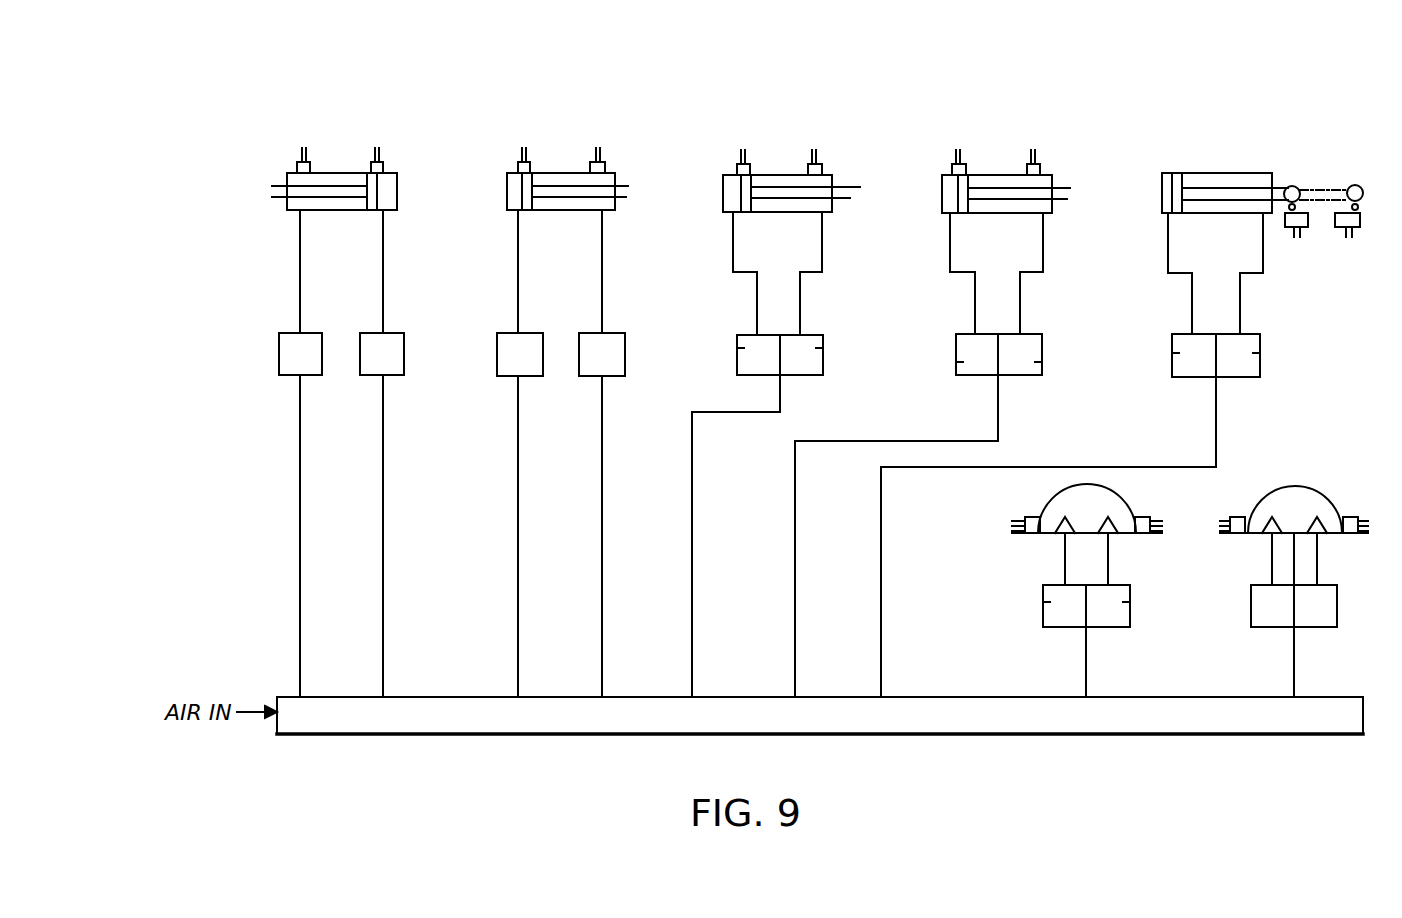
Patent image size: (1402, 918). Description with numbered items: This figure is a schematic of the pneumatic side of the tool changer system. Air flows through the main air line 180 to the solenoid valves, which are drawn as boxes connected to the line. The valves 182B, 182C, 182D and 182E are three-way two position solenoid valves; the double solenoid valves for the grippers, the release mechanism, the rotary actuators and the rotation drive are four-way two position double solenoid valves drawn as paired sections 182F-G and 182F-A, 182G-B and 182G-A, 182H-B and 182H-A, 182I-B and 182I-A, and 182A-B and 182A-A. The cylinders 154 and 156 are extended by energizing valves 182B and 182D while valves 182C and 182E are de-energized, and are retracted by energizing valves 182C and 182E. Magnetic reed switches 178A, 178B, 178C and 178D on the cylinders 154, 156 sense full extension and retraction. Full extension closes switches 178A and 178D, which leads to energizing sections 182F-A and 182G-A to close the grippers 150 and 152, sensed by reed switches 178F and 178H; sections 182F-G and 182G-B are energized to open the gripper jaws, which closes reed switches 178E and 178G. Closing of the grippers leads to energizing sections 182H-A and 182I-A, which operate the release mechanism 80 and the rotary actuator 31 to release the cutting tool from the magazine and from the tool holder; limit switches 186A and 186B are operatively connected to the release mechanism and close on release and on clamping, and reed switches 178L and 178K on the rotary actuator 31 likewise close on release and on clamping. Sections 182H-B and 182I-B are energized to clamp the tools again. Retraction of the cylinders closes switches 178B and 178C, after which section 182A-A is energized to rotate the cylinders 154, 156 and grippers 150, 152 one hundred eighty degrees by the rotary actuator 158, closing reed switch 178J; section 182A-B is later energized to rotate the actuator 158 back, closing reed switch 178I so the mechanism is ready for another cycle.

The cylinder 154 is at (332, 172).
The magnetic reed switch 178A is at (297, 166).
The magnetic reed switch 178B is at (385, 163).
The cylinder 156 is at (557, 173).
The magnetic reed switch 178C is at (518, 165).
The magnetic reed switch 178D is at (605, 165).
The gripper 150 is at (770, 180).
The magnetic reed switch 178E is at (737, 168).
The magnetic reed switch 178F is at (822, 167).
The gripper 152 is at (993, 175).
The magnetic reed switch 178G is at (952, 166).
The magnetic reed switch 178H is at (1040, 167).
The mechanism 80 is at (1240, 160).
The limit switch 186A is at (1287, 226).
The limit switch 186B is at (1362, 215).
The three-way two position solenoid valve 182C is at (283, 335).
The three-way two position solenoid valve 182B is at (399, 333).
The three-way two position solenoid valve 182D is at (500, 368).
The three-way two position solenoid valve 182E is at (610, 378).
The four-way double solenoid valve section 182F-G is at (743, 348).
The four-way double solenoid valve section 182F-A is at (850, 330).
The four-way double solenoid valve section 182G-B is at (962, 362).
The four-way double solenoid valve section 182G-A is at (1058, 383).
The four-way double solenoid valve section 182H-B is at (1178, 353).
The four-way double solenoid valve section 182H-A is at (1290, 333).
The rotary actuator 31 is at (1065, 493).
The magnetic reed switch 178K is at (1032, 517).
The magnetic reed switch 178L is at (1140, 517).
The rotary actuator 158 is at (1287, 497).
The magnetic reed switch 178I is at (1240, 517).
The magnetic reed switch 178J is at (1370, 497).
The four-way double solenoid valve section 182I-B is at (1048, 602).
The four-way double solenoid valve section 182I-A is at (1153, 583).
The four-way double solenoid valve section 182A-B is at (1255, 612).
The four-way double solenoid valve section 182A-A is at (1333, 612).
The main air line 180 is at (493, 718).